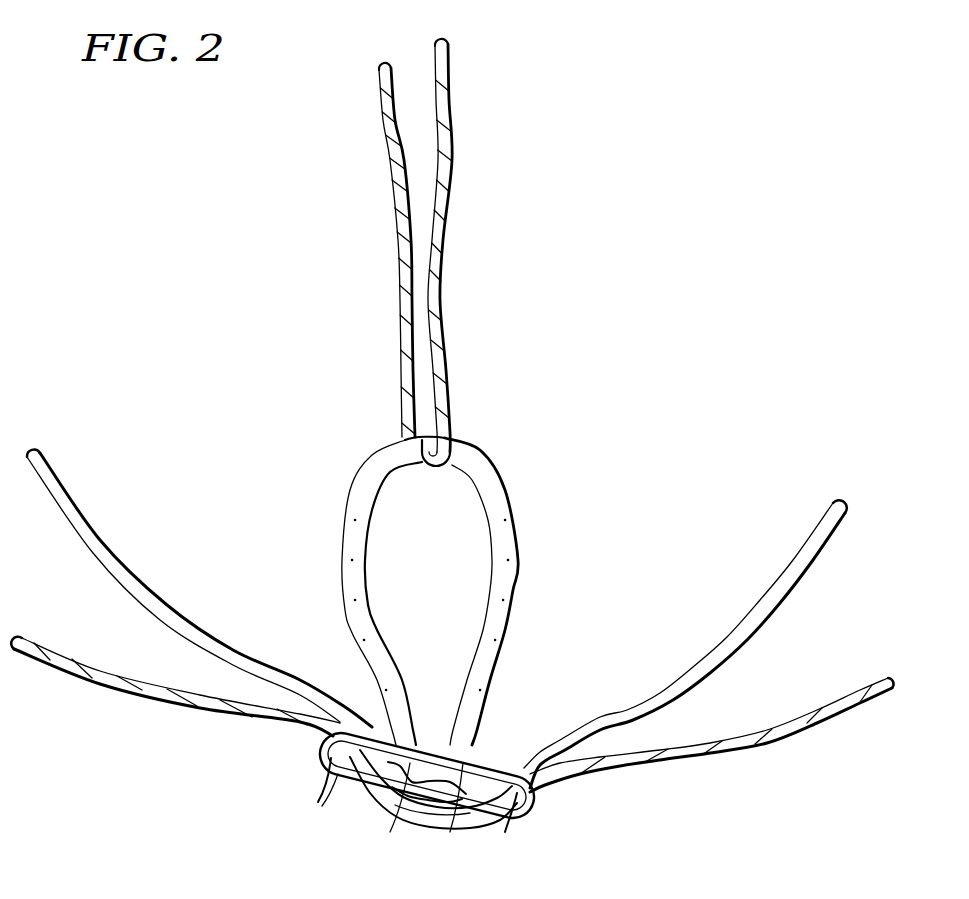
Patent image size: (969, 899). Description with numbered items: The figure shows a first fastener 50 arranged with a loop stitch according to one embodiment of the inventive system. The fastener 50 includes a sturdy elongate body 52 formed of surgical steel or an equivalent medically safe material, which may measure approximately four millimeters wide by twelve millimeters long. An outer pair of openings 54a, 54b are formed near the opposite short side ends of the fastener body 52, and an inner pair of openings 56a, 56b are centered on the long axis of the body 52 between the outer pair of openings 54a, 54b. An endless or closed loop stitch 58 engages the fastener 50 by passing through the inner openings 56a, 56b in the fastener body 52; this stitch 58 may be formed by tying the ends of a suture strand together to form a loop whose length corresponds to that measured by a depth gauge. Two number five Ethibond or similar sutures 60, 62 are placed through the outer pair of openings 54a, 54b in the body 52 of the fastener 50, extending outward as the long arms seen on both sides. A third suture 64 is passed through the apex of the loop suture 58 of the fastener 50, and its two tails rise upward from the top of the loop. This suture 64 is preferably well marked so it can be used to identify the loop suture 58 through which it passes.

The fastener 50 is at (542, 601).
The elongate body 52 is at (537, 806).
The outer opening 54a is at (347, 778).
The outer opening 54b is at (500, 815).
The inner opening 56a is at (390, 813).
The inner opening 56b is at (452, 832).
The closed loop stitch 58 is at (503, 517).
The suture 60 is at (98, 545).
The suture 62 is at (126, 688).
The third suture 64 is at (397, 155).